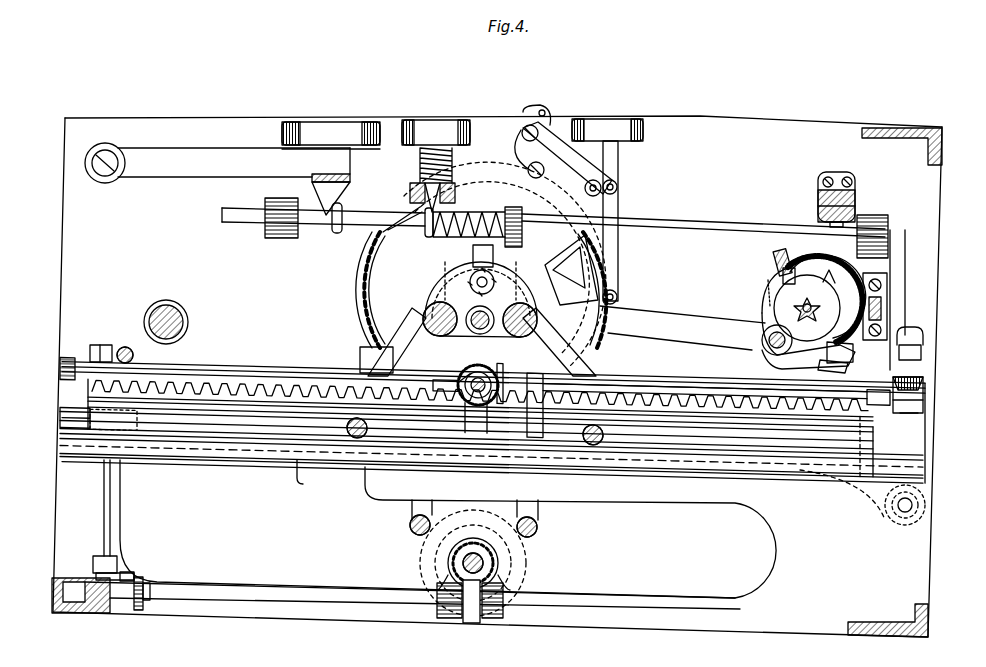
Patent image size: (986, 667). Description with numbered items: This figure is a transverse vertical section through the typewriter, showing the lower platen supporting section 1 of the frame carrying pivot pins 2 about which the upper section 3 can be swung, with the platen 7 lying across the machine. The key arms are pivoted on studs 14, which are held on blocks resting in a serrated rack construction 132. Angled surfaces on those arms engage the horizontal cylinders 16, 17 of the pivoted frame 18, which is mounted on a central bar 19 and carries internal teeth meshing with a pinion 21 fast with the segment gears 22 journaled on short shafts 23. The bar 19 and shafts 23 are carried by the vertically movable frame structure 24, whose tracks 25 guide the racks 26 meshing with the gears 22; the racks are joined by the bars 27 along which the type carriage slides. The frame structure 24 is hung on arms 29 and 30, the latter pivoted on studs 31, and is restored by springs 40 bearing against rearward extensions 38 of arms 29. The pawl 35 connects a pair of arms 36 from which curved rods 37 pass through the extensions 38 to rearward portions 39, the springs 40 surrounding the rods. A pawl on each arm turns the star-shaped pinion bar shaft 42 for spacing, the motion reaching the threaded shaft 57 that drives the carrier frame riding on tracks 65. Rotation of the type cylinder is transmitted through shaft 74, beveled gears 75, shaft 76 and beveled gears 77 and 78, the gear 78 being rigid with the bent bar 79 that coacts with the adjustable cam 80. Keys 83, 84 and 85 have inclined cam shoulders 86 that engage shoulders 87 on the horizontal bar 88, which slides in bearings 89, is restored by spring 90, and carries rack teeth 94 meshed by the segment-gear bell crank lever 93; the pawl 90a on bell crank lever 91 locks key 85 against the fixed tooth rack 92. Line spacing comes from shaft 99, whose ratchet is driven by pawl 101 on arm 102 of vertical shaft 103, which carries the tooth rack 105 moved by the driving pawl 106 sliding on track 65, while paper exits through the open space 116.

The lower platen supporting section 1 is at (770, 625).
The pivot pins 2 is at (898, 512).
The upper section 3 is at (776, 127).
The platen 7 is at (528, 568).
The studs 14 is at (768, 350).
The cylinder 16 is at (432, 306).
The cylinder 17 is at (538, 312).
The pivoted frame 18 is at (445, 278).
The central bar 19 is at (470, 372).
The pinion 21 is at (510, 280).
The segment gears 22 is at (362, 292).
The short shafts 23 is at (472, 274).
The frame structure 24 is at (360, 352).
The tracks 25 is at (62, 416).
The racks 26 is at (262, 384).
The bars 27 is at (346, 428).
The arms 29 is at (680, 330).
The arms 30 is at (234, 455).
The studs 31 is at (132, 455).
The pawl 35 is at (775, 255).
The arms 36 is at (797, 277).
The curved rods 37 is at (812, 305).
The rearward extensions 38 is at (868, 342).
The rearwardly extending portions 39 is at (832, 364).
The springs 40 is at (832, 272).
The star-shaped pinion bar shaft 42 is at (815, 308).
The threaded shaft 57 is at (182, 308).
The tracks 65 is at (134, 356).
The shaft 74 is at (455, 374).
The beveled gears 75 is at (500, 364).
The shaft 76 is at (658, 384).
The beveled gear 77 is at (905, 415).
The beveled gear 78 is at (925, 384).
The bent bar 79 is at (922, 335).
The adjustable cam 80 is at (912, 335).
The key 83 is at (340, 125).
The key 84 is at (428, 122).
The key 85 is at (636, 122).
The inclined cam shoulder 86 is at (345, 195).
The shoulders 87 is at (337, 234).
The horizontal bar 88 is at (695, 228).
The bearings 89 is at (278, 240).
The spring 90 is at (488, 212).
The pawl 90a is at (520, 158).
The bell crank lever 91 is at (568, 170).
The fixed tooth rack 92 is at (550, 127).
The bell crank lever 93 is at (605, 262).
The rack teeth 94 is at (545, 240).
The shaft 99 is at (290, 590).
The pawl 101 is at (140, 577).
The arm 102 is at (93, 566).
The vertical shaft 103 is at (104, 513).
The tooth rack 105 is at (62, 358).
The driving pawl 106 is at (99, 345).
The open space 116 is at (865, 622).
The rack construction 132 is at (818, 198).